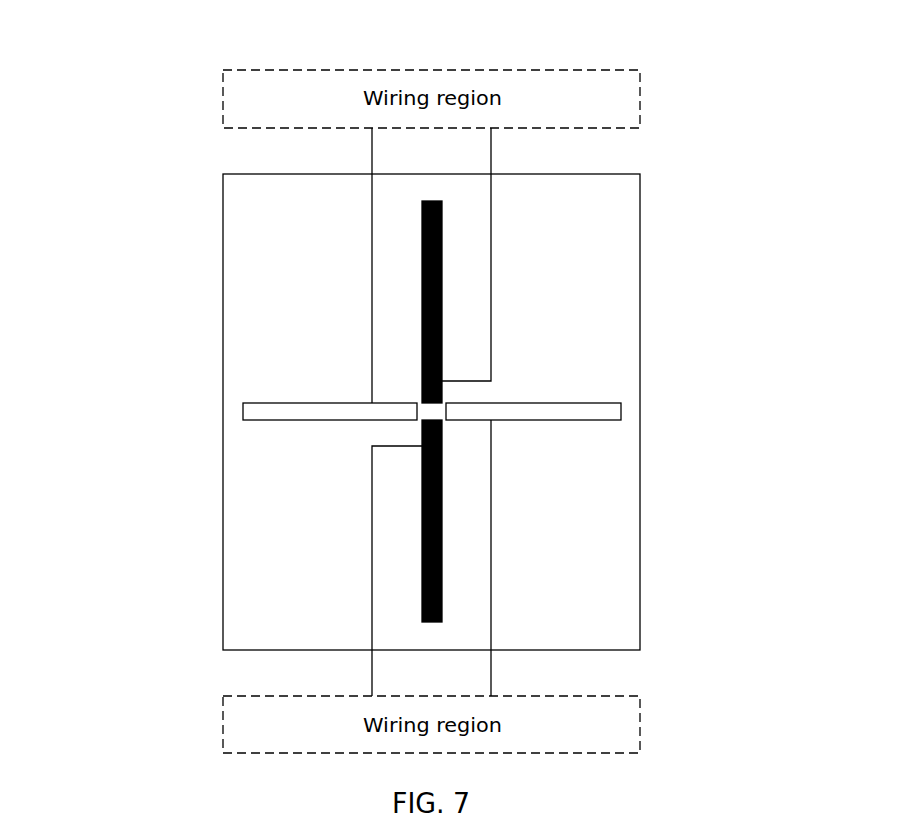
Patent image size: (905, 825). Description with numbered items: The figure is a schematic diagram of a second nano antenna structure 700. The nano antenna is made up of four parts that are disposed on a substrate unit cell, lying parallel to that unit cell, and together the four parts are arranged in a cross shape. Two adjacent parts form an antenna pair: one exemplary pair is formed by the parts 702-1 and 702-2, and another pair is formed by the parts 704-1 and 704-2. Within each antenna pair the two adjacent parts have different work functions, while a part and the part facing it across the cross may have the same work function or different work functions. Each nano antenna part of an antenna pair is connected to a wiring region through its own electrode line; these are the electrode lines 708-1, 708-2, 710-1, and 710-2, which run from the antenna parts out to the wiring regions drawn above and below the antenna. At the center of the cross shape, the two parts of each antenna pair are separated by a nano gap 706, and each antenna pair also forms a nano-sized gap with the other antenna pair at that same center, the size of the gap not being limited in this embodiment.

The second nano antenna structure 700 is at (704, 39).
The nano antenna part 702-1 is at (444, 295).
The nano antenna part 702-2 is at (563, 401).
The nano antenna part 704-1 is at (421, 590).
The nano antenna part 704-2 is at (303, 403).
The nano gap 706 is at (400, 391).
The electrode line 708-1 is at (491, 355).
The electrode line 708-2 is at (492, 570).
The electrode line 710-1 is at (372, 638).
The electrode line 710-2 is at (372, 403).